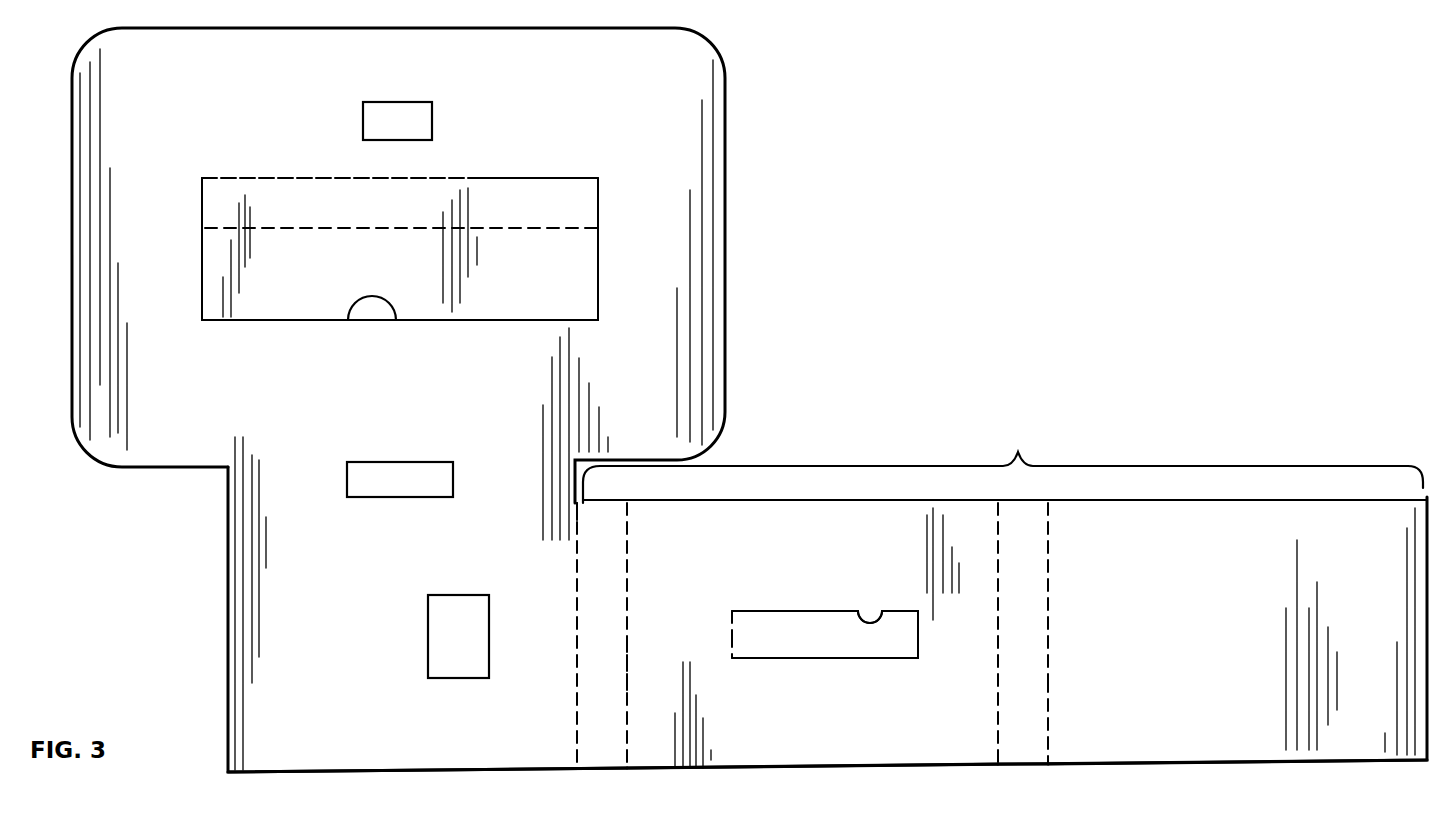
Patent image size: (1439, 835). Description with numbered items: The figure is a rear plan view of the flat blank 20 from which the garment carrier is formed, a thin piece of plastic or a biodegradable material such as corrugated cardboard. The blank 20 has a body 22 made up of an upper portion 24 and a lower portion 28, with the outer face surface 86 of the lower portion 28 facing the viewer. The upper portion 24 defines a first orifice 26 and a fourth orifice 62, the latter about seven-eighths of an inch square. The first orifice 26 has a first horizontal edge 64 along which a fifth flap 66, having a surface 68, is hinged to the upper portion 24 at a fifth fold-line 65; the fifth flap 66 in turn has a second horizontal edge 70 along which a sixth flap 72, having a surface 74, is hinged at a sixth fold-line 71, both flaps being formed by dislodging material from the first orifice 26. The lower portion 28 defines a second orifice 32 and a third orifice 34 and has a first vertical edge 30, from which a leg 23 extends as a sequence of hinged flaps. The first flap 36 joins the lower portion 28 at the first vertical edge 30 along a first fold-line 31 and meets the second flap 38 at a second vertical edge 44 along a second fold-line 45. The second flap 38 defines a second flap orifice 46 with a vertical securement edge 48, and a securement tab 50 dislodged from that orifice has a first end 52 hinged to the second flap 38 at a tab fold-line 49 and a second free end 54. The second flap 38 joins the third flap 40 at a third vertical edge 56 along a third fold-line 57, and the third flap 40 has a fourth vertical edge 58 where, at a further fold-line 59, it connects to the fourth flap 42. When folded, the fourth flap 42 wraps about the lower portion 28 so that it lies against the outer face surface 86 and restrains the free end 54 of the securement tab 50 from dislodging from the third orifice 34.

The blank 20 is at (787, 361).
The body 22 is at (222, 497).
The leg 23 is at (1005, 464).
The upper portion 24 is at (674, 114).
The first orifice 26 is at (352, 318).
The lower portion 28 is at (272, 655).
The first vertical edge 30 is at (577, 607).
The first fold-line 31 is at (577, 560).
The second orifice 32 is at (413, 478).
The third orifice 34 is at (475, 612).
The first flap 36 is at (603, 745).
The second flap 38 is at (792, 748).
The third flap 40 is at (1022, 738).
The fourth flap 42 is at (1152, 745).
The second vertical edge 44 is at (627, 655).
The second fold-line 45 is at (627, 592).
The second flap orifice 46 is at (888, 590).
The vertical securement edge 48 is at (732, 640).
The tab fold-line 49 is at (735, 647).
The securement tab 50 is at (848, 645).
The first end 52 is at (745, 622).
The second free end 54 is at (900, 637).
The third vertical edge 56 is at (998, 665).
The third fold-line 57 is at (1000, 563).
The fourth vertical edge 58 is at (1048, 630).
The fold-line 59 is at (1050, 705).
The fourth orifice 62 is at (375, 118).
The first horizontal edge 64 is at (487, 178).
The fifth fold-line 65 is at (555, 180).
The fifth flap 66 is at (216, 198).
The surface 68 is at (369, 210).
The second horizontal edge 70 is at (483, 230).
The sixth fold-line 71 is at (540, 227).
The sixth flap 72 is at (212, 263).
The surface 74 is at (347, 282).
The outer face surface 86 is at (342, 729).